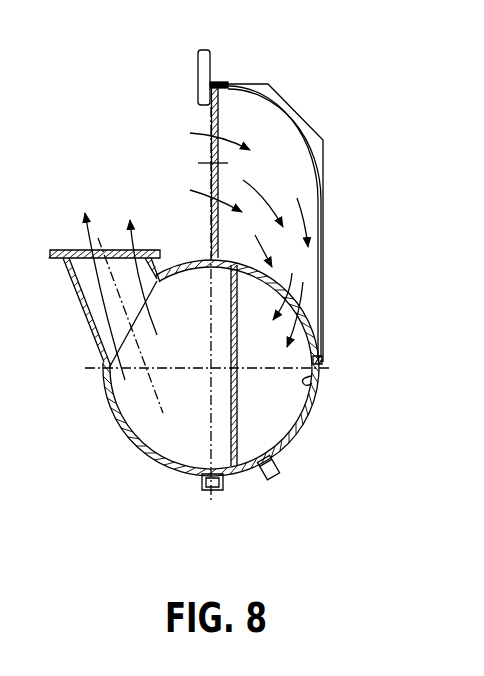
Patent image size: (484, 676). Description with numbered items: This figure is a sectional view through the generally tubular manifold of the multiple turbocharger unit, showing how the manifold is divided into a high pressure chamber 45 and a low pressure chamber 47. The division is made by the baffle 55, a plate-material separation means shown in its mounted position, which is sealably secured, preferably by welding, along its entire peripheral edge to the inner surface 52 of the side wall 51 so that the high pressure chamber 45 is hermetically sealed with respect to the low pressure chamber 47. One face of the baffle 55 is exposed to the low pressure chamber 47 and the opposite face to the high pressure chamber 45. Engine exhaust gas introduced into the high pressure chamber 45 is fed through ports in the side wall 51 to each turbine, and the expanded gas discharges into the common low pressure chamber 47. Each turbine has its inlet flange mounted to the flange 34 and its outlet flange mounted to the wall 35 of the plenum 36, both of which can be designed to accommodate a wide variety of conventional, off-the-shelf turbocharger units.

The flange 34 is at (60, 250).
The wall 35 is at (212, 246).
The plenum 36 is at (232, 85).
The high pressure chamber 45 is at (195, 438).
The low pressure chamber 47 is at (277, 412).
The side wall 51 is at (313, 400).
The inner surface 52 is at (310, 378).
The baffle 55 is at (238, 346).